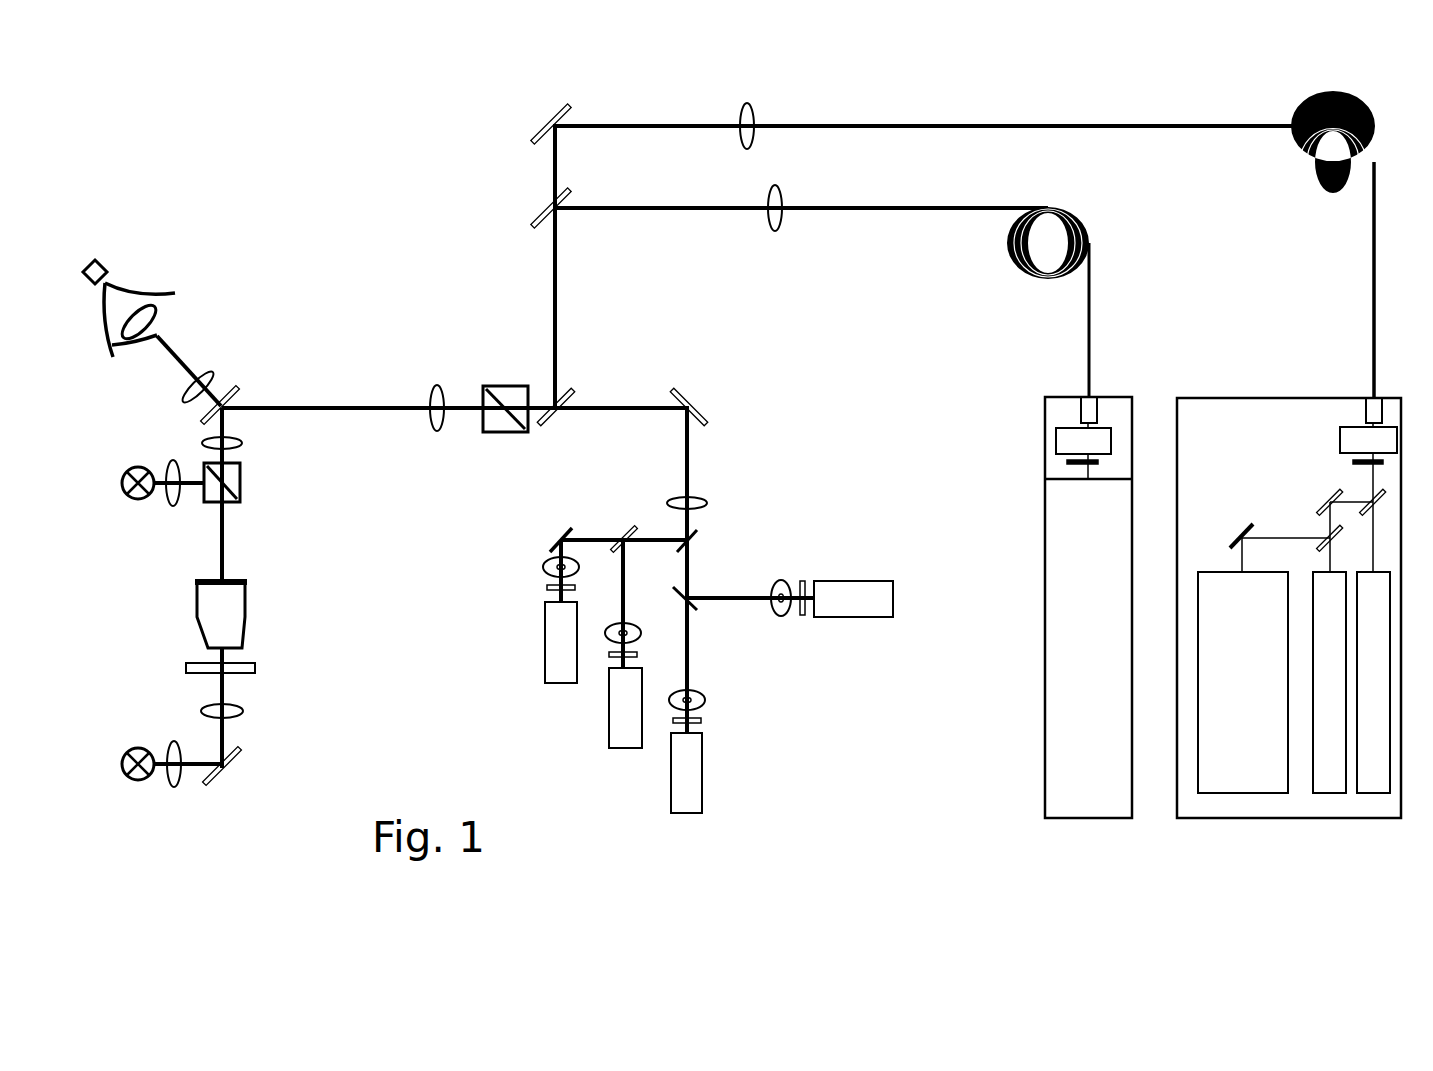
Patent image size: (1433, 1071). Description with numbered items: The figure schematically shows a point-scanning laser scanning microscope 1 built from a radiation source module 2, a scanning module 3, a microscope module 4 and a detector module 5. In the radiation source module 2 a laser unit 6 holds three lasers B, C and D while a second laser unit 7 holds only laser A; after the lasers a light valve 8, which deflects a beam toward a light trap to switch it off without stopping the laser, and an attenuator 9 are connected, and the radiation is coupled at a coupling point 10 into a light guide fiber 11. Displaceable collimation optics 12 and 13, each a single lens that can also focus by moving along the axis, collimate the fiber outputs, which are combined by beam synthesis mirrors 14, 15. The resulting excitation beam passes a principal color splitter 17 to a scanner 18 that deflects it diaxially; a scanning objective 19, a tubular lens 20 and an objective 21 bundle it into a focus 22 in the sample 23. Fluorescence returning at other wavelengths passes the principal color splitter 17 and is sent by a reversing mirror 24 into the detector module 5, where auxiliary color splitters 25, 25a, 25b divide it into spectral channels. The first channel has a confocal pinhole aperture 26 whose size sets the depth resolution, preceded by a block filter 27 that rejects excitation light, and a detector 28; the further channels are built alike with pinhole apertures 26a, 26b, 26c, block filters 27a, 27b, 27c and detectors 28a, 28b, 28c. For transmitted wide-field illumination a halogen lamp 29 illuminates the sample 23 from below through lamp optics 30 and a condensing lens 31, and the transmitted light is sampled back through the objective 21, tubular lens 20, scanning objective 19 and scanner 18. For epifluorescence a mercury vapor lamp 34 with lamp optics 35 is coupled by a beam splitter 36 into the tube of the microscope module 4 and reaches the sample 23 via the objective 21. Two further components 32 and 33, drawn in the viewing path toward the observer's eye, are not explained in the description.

The laser scanning microscope 1 is at (286, 143).
The radiation source module 2 is at (1385, 104).
The scanning module 3 is at (945, 92).
The microscope module 4 is at (110, 868).
The detector module 5 is at (962, 835).
The laser unit 6 is at (1303, 615).
The laser unit 7 is at (1075, 818).
The light valve 8 is at (1383, 463).
The attenuator 9 is at (1340, 440).
The coupling point 10 is at (1366, 405).
The light guide fiber 11 is at (1374, 275).
The collimation optics 12 is at (752, 114).
The collimation optics 13 is at (778, 229).
The beam synthesis mirror 14 is at (540, 133).
The beam synthesis mirror 15 is at (540, 222).
The principal color splitter 17 is at (545, 420).
The scanner 18 is at (495, 432).
The scanning objective 19 is at (437, 431).
The tubular lens 20 is at (242, 445).
The objective 21 is at (245, 592).
The focus 22 is at (230, 656).
The sample 23 is at (255, 668).
The reversing mirror 24 is at (706, 420).
The auxiliary color splitter 25 is at (691, 532).
The auxiliary color splitter 25a is at (670, 585).
The auxiliary color splitter 25b is at (636, 528).
The confocal pinhole aperture 26 is at (705, 700).
The pinhole aperture 26a is at (781, 580).
The pinhole aperture 26b is at (628, 624).
The pinhole aperture 26c is at (543, 567).
The block filter 27 is at (701, 721).
The block filter 27a is at (803, 616).
The block filter 27b is at (609, 655).
The block filter 27c is at (547, 588).
The detector 28 is at (702, 800).
The detector 28a is at (893, 605).
The detector 28b is at (623, 748).
The detector 28c is at (545, 665).
The halogen lamp 29 is at (138, 780).
The lamp optics 30 is at (174, 787).
The condensing lens 31 is at (242, 714).
The deflecting mirror 32 is at (238, 388).
The eyepiece lens 33 is at (205, 374).
The mercury vapor lamp 34 is at (138, 500).
The lamp optics 35 is at (173, 460).
The beam splitter 36 is at (240, 490).